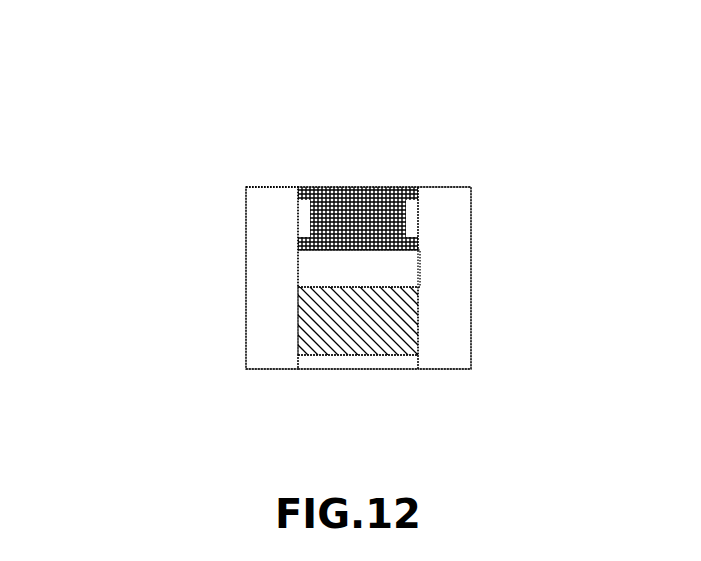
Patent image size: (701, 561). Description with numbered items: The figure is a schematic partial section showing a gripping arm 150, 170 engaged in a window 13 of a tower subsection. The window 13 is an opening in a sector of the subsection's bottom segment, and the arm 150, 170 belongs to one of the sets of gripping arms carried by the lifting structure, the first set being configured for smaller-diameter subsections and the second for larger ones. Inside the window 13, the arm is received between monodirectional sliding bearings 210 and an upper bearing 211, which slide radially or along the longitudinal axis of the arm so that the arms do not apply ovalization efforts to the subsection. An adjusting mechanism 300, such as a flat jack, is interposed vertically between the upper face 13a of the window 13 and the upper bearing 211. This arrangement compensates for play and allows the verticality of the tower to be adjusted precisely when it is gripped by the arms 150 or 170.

The window 13 is at (360, 372).
The housing surface 13a is at (272, 187).
The sliding bearing 210 is at (457, 292).
The upper bearing 211 is at (317, 272).
The adjusting mechanism 300 is at (360, 213).
The gripping arm 150 is at (257, 299).
The gripping arm 170 is at (343, 301).